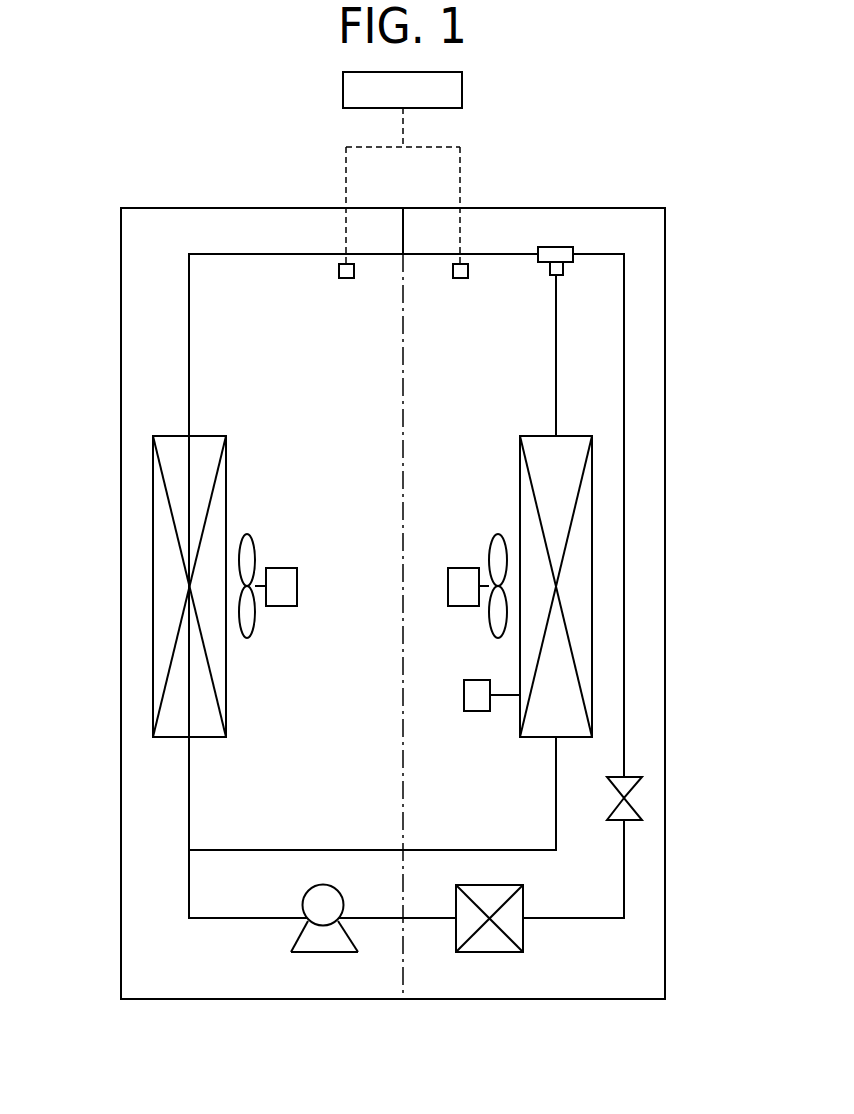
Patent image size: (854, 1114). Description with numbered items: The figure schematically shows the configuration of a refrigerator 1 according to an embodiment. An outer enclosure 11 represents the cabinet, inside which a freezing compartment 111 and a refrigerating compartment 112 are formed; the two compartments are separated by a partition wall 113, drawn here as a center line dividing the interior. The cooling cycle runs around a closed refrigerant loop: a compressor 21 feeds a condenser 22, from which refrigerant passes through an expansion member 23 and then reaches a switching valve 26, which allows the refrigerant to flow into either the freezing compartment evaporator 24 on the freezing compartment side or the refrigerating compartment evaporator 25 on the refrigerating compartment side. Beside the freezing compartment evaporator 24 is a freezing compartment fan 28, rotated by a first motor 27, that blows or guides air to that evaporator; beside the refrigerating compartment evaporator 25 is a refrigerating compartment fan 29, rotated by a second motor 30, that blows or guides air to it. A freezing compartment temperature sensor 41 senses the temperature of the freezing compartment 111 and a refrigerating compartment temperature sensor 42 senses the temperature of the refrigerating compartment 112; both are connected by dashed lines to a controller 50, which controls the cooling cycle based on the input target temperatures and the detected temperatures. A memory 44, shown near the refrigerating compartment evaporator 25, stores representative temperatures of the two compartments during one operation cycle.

The refrigerator 1 is at (648, 168).
The cabinet 11 is at (665, 393).
The freezing compartment 111 is at (298, 225).
The refrigerating compartment 112 is at (436, 225).
The partition wall 113 is at (403, 310).
The compressor 21 is at (323, 945).
The condenser 22 is at (523, 931).
The expansion member 23 is at (634, 790).
The freezing compartment evaporator 24 is at (153, 595).
The refrigerating compartment evaporator 25 is at (592, 645).
The switching valve 26 is at (557, 247).
The first motor 27 is at (281, 606).
The freezing compartment fan 28 is at (240, 627).
The refrigerating compartment fan 29 is at (502, 560).
The second motor 30 is at (463, 572).
The freezing compartment temperature sensor 41 is at (339, 271).
The refrigerating compartment temperature sensor 42 is at (468, 271).
The memory 44 is at (472, 711).
The controller 50 is at (463, 91).